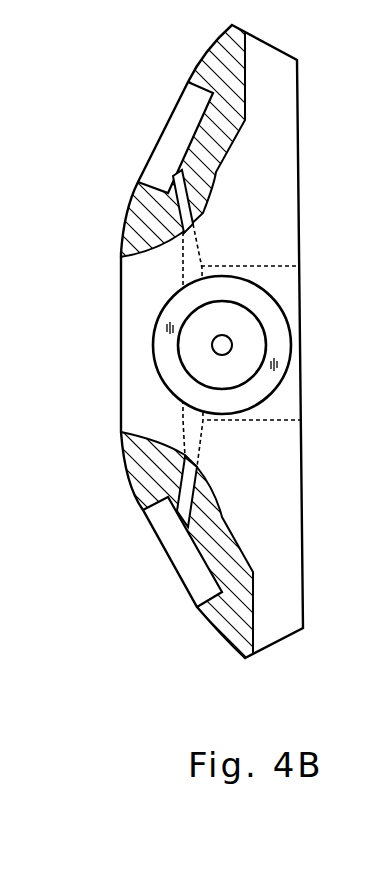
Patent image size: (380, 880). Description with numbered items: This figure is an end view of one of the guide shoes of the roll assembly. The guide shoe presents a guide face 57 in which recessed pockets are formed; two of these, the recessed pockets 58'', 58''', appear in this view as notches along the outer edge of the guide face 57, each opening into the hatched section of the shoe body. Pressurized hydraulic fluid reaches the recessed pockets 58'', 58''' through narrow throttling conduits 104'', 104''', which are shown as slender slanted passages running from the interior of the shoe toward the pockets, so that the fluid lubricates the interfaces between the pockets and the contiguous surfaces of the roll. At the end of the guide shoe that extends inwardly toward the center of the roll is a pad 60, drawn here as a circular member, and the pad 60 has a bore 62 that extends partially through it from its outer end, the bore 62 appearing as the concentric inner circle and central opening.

The guide face 57 is at (212, 627).
The recessed pocket 58'' is at (148, 128).
The recessed pocket 58''' is at (157, 564).
The throttling conduit 104'' is at (122, 200).
The throttling conduit 104''' is at (120, 492).
The pad 60 is at (156, 368).
The bore 62 is at (247, 335).